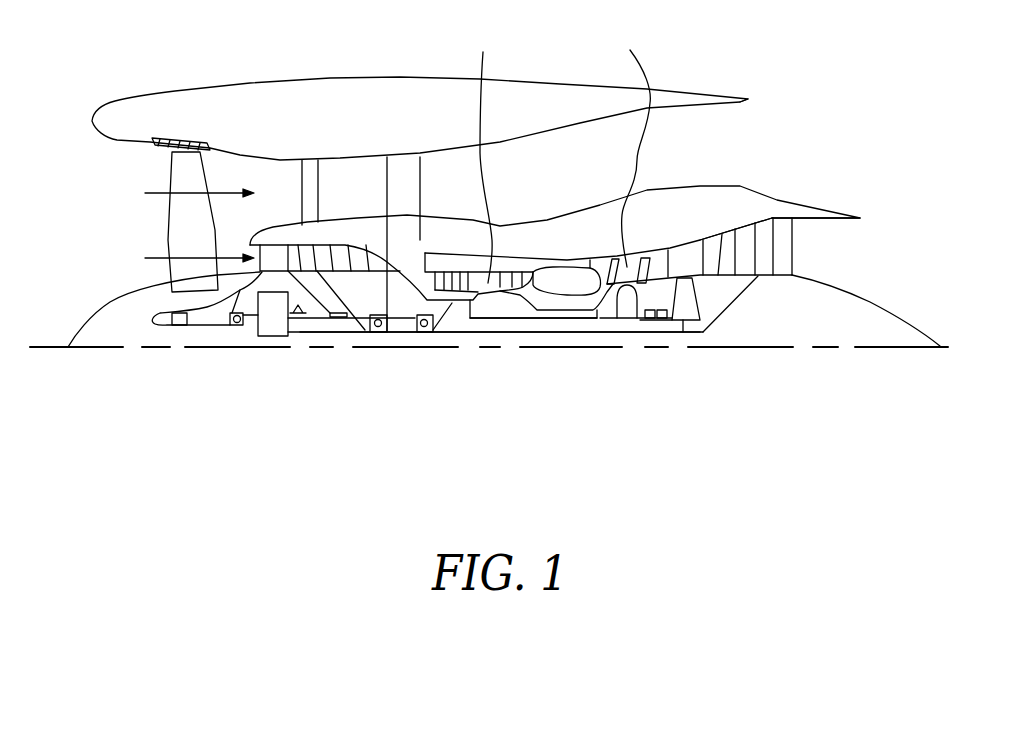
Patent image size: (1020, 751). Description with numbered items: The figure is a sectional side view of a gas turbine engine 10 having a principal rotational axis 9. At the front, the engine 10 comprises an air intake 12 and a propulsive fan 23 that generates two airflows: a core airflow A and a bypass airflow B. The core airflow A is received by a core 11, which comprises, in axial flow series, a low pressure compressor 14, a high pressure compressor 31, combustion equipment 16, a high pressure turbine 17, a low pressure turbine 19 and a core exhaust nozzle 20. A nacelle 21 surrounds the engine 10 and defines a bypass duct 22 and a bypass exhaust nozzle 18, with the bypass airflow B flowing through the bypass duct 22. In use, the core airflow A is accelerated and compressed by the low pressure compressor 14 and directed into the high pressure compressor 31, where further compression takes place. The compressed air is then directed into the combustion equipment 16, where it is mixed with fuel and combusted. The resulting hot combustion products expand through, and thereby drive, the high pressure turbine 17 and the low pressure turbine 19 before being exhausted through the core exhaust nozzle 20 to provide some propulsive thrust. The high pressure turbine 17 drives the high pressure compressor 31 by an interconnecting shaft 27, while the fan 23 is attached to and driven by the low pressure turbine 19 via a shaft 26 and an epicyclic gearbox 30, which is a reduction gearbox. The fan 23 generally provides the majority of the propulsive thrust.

The principal rotational axis 9 is at (745, 350).
The gas turbine engine 10 is at (168, 90).
The core 11 is at (537, 237).
The air intake 12 is at (118, 167).
The low pressure compressor 14 is at (347, 245).
The combustion equipment 16 is at (563, 284).
The high-pressure turbine 17 is at (633, 145).
The bypass exhaust nozzle 18 is at (752, 141).
The low pressure turbine 19 is at (763, 237).
The core exhaust nozzle 20 is at (838, 248).
The nacelle 21 is at (397, 87).
The bypass duct 22 is at (691, 157).
The propulsive fan 23 is at (172, 223).
The shaft 26 is at (482, 334).
The interconnecting shaft 27 is at (527, 319).
The epicyclic gearbox 30 is at (268, 338).
The high-pressure compressor 31 is at (483, 154).